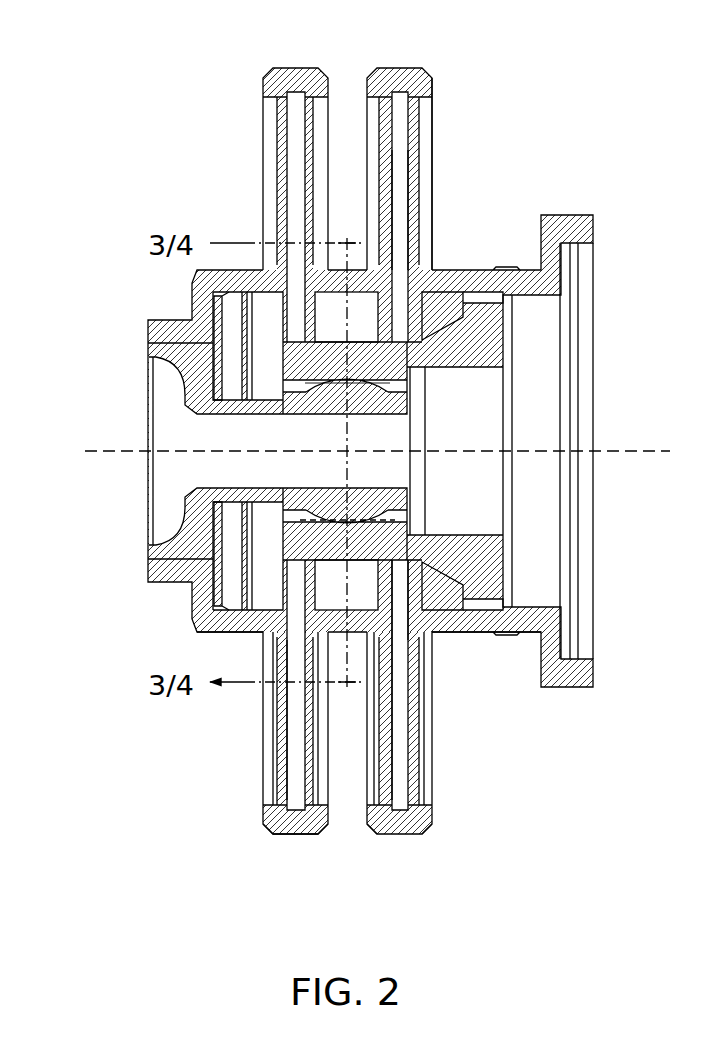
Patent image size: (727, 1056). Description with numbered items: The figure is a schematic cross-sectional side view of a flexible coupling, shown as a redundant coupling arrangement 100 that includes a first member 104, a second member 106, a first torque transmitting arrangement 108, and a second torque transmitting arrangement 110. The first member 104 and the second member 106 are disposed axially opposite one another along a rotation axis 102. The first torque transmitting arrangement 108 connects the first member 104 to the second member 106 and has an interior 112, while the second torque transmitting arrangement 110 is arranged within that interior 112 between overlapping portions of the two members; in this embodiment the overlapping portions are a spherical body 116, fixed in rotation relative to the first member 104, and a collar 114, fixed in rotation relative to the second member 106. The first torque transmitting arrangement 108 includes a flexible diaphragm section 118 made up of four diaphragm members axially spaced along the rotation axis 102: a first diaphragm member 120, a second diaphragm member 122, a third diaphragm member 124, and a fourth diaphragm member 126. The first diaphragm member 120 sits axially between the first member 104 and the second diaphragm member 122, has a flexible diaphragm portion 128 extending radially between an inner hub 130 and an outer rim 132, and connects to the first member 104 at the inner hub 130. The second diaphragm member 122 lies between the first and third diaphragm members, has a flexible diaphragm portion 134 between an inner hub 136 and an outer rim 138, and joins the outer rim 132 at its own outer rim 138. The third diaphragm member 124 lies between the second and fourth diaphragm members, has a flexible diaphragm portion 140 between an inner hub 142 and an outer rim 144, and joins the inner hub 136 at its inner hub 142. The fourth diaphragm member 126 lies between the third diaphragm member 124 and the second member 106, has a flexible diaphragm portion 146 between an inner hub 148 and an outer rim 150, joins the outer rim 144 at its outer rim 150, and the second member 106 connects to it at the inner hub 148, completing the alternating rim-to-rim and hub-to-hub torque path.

The redundant coupling arrangement 100 is at (115, 805).
The rotation axis 102 is at (632, 457).
The first member 104 is at (198, 605).
The second member 106 is at (552, 672).
The first torque transmitting arrangement 108 is at (353, 720).
The second torque transmitting arrangement 110 is at (440, 393).
The interior 112 is at (364, 328).
The collar 114 is at (375, 355).
The spherical body 116 is at (310, 400).
The flexible diaphragm section 118 is at (286, 141).
The first diaphragm member 120 is at (248, 108).
The second diaphragm member 122 is at (330, 110).
The third diaphragm member 124 is at (355, 150).
The fourth diaphragm member 126 is at (453, 123).
The flexible diaphragm portion 128 is at (275, 720).
The inner hub 130 is at (255, 640).
The outer rim 132 is at (255, 825).
The flexible diaphragm portion 134 is at (300, 757).
The inner hub 136 is at (338, 643).
The outer rim 138 is at (335, 810).
The flexible diaphragm portion 140 is at (382, 745).
The inner hub 142 is at (396, 660).
The outer rim 144 is at (365, 836).
The flexible diaphragm portion 146 is at (425, 762).
The inner hub 148 is at (437, 644).
The outer rim 150 is at (440, 817).